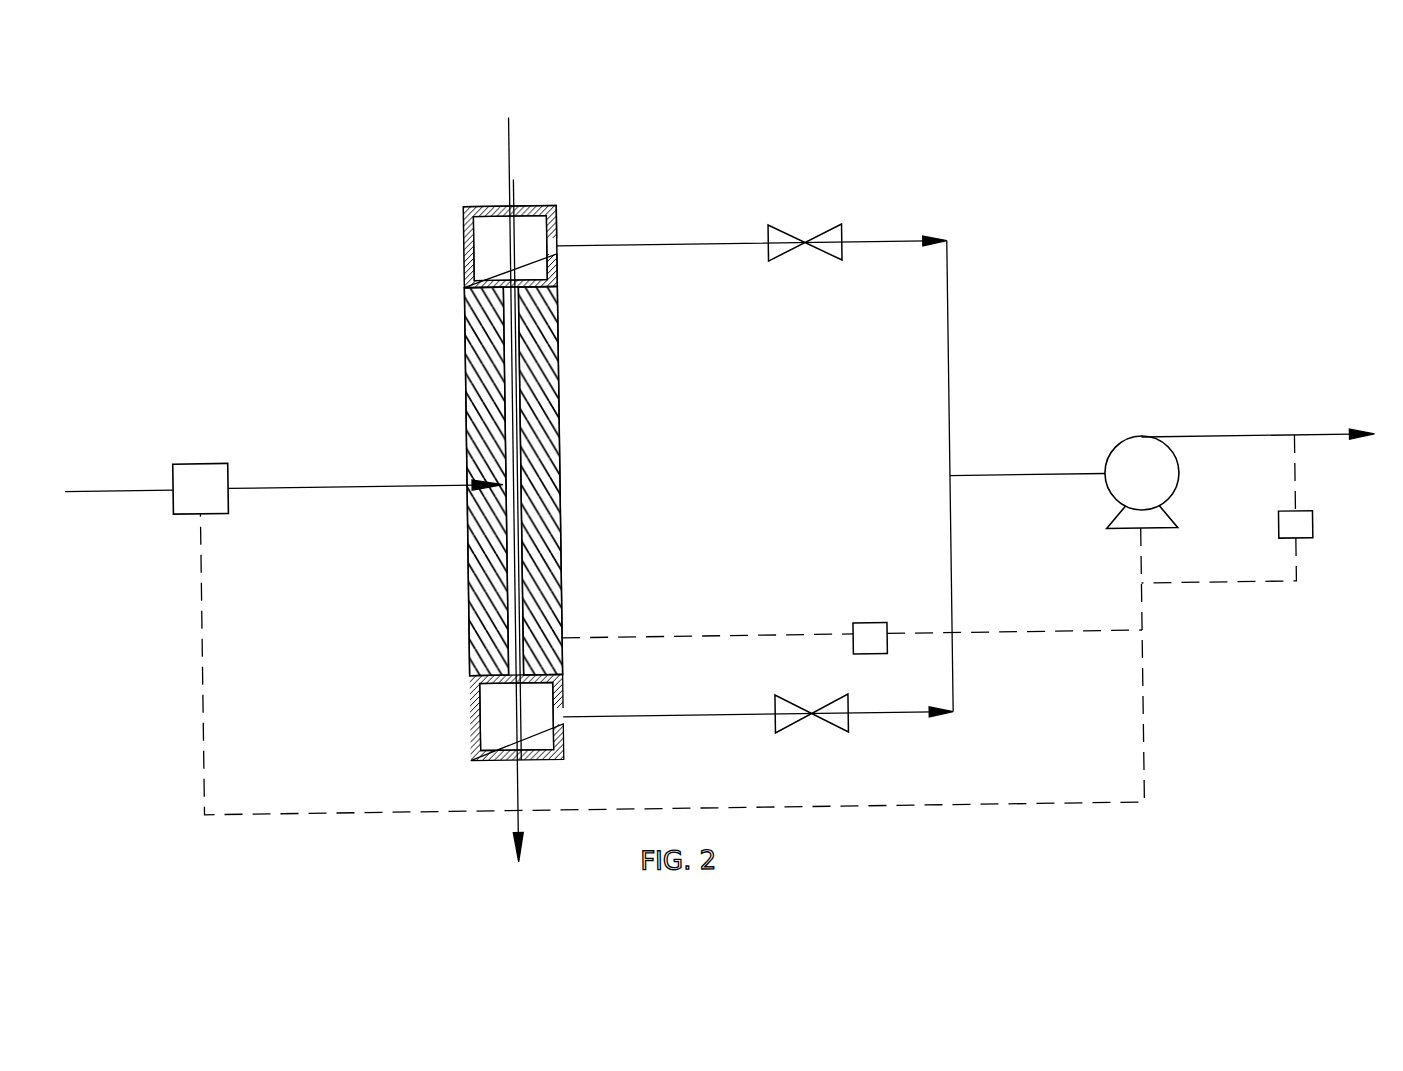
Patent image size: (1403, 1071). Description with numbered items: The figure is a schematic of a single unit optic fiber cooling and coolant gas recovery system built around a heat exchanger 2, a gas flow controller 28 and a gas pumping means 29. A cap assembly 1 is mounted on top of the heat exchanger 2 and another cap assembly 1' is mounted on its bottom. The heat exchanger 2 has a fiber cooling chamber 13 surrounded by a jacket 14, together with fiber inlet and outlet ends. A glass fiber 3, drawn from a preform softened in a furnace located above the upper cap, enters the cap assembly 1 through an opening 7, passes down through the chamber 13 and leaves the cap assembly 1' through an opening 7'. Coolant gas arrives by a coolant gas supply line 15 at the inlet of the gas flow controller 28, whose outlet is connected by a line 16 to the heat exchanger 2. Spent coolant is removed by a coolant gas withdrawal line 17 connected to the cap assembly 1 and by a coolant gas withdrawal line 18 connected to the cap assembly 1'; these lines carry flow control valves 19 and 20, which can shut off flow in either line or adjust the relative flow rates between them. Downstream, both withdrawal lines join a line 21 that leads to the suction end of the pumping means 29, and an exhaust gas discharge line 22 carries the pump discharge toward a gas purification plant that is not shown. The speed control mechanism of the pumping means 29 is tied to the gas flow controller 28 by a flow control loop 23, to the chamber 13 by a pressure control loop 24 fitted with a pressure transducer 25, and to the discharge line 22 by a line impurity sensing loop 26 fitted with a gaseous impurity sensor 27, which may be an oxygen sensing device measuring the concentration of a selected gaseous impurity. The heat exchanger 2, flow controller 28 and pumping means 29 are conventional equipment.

The cap assembly 1 is at (441, 226).
The cap assembly 1' is at (469, 729).
The heat exchanger 2 is at (469, 320).
The glass fiber 3 is at (513, 138).
The opening 7 is at (544, 216).
The opening 7' is at (568, 736).
The fiber cooling chamber 13 is at (527, 500).
The jacket 14 is at (513, 480).
The coolant gas supply line 15 is at (108, 483).
The line 16 is at (282, 482).
The coolant gas withdrawal line 17 is at (878, 244).
The coolant gas withdrawal line 18 is at (887, 715).
The flow control valve 19 is at (791, 229).
The flow control valve 20 is at (794, 723).
The line 21 is at (1013, 479).
The exhaust gas discharge line 22 is at (1253, 443).
The flow control loop 23 is at (1141, 743).
The pressure control loop 24 is at (1001, 639).
The pressure transducer 25 is at (868, 625).
The line impurity sensing loop 26 is at (1236, 590).
The gaseous impurity sensor 27 is at (1312, 535).
The gas flow controller 28 is at (195, 457).
The gas pumping means 29 is at (1112, 503).